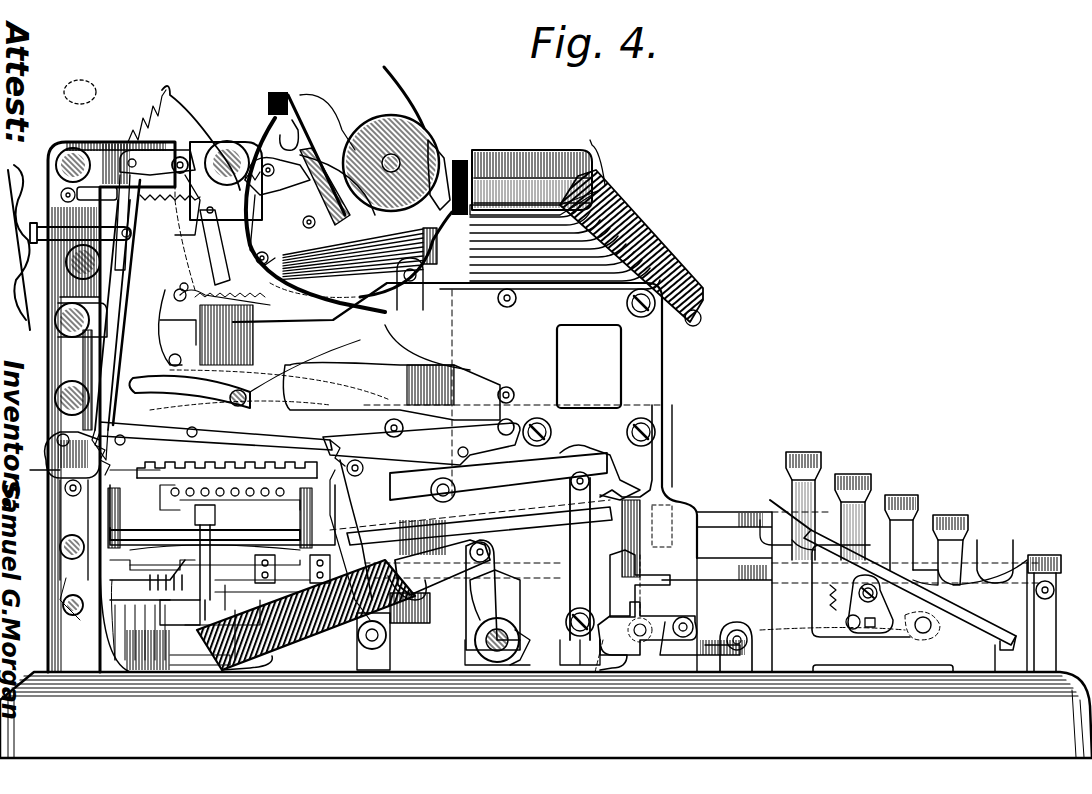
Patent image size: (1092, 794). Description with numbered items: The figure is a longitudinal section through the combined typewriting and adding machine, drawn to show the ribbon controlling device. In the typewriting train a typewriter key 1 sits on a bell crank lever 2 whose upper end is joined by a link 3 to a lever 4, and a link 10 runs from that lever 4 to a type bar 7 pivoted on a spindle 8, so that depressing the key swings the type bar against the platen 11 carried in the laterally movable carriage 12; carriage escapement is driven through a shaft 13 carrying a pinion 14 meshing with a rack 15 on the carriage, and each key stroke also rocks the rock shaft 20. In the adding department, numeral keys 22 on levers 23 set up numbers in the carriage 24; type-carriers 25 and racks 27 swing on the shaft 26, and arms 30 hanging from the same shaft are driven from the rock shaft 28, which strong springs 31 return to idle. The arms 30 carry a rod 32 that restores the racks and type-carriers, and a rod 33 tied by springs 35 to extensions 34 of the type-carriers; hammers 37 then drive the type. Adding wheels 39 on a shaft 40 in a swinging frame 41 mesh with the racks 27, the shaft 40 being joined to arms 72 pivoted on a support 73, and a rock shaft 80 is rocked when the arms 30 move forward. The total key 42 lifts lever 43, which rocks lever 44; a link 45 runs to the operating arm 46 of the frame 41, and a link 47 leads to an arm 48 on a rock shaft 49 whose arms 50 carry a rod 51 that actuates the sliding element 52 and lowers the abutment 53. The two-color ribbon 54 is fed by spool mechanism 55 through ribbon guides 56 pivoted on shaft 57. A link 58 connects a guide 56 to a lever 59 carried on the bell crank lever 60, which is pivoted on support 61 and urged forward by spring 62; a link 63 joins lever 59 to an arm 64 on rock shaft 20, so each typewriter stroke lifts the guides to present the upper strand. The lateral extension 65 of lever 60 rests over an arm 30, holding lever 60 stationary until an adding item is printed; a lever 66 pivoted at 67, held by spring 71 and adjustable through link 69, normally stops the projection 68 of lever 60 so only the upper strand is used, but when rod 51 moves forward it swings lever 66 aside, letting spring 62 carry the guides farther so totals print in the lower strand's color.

The typewriter keys 1 is at (990, 520).
The bellcrank levers 2 is at (675, 440).
The links 3 is at (588, 405).
The levers 4 is at (50, 300).
The typewriting type bars 7 is at (672, 270).
The spindles 8 is at (480, 212).
The links 10 is at (395, 232).
The platen 11 is at (450, 138).
The carriage 12 is at (322, 150).
The rod or shaft 13 is at (286, 218).
The pinion 14 is at (372, 130).
The rack 15 is at (380, 70).
The rock shaft 20 is at (60, 268).
The numeral keys 22 is at (812, 452).
The levers 23 is at (740, 520).
The carriage 24 is at (221, 577).
The type-carriers 25 is at (270, 385).
The shaft 26 is at (228, 142).
The racks 27 is at (236, 475).
The rock shaft 28 is at (455, 680).
The arms 30 is at (190, 248).
The springs 31 is at (322, 640).
The rod 32 is at (190, 358).
The rod 33 is at (105, 142).
The extensions 34 is at (175, 90).
The springs 35 is at (145, 115).
The type driving hammers 37 is at (665, 283).
The adding wheels 39 is at (470, 470).
The shaft 40 is at (500, 514).
The swinging frame 41 is at (410, 565).
The key 42 is at (870, 475).
The lever 43 is at (758, 640).
The lever 44 is at (660, 640).
The link 45 is at (560, 548).
The operating arm 46 is at (577, 472).
The link 47 is at (160, 668).
The arm 48 is at (72, 680).
The rock shaft 49 is at (108, 662).
The arms 50 is at (74, 530).
The rod 51 is at (40, 460).
The sliding element 52 is at (72, 444).
The abutment 53 is at (170, 438).
The ribbon 54 is at (500, 160).
The spool mechanism 55 is at (640, 130).
The ribbon guides 56 is at (285, 300).
The shaft 57 is at (245, 185).
The link 58 is at (245, 298).
The lever 59 is at (170, 212).
The bell crank lever 60 is at (185, 175).
The support 61 is at (166, 173).
The spring 62 is at (181, 317).
The link 63 is at (84, 176).
The arm 64 is at (80, 212).
The lateral extension 65 is at (105, 142).
The lever 66 is at (97, 320).
The pivot 67 is at (56, 325).
The projection 68 is at (135, 160).
The link 69 is at (46, 240).
The spring 71 is at (121, 228).
The arms 72 is at (421, 444).
The support 73 is at (512, 420).
The rock shaft 80 is at (520, 297).